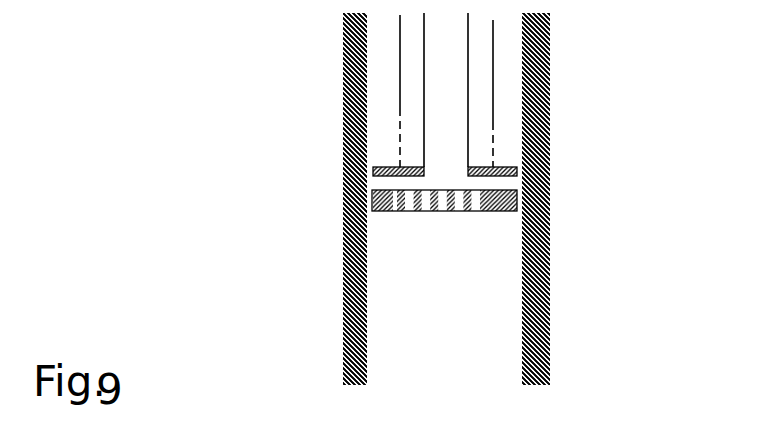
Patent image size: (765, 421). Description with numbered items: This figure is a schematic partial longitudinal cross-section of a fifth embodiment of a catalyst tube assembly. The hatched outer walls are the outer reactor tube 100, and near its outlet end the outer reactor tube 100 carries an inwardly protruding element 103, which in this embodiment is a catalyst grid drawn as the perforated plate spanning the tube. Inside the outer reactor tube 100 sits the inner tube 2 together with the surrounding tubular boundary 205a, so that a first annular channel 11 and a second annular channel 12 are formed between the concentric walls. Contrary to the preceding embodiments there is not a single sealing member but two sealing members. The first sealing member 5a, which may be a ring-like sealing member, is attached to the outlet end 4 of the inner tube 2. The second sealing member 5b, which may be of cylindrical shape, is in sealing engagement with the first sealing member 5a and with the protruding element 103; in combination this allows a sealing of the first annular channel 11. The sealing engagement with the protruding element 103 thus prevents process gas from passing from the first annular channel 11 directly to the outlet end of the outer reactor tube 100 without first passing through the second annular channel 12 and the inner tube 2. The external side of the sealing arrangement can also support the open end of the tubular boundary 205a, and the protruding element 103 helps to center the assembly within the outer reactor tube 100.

The inner tube 2 is at (328, 92).
The outer reactor tube 100 is at (327, 180).
The protruding element 103 is at (552, 206).
The first annular channel 11 is at (380, 108).
The second annular channel 12 is at (412, 143).
The tubular boundary 205a is at (495, 85).
The outlet end 4 is at (423, 169).
The first sealing member 5a is at (490, 168).
The second sealing member 5b is at (515, 190).